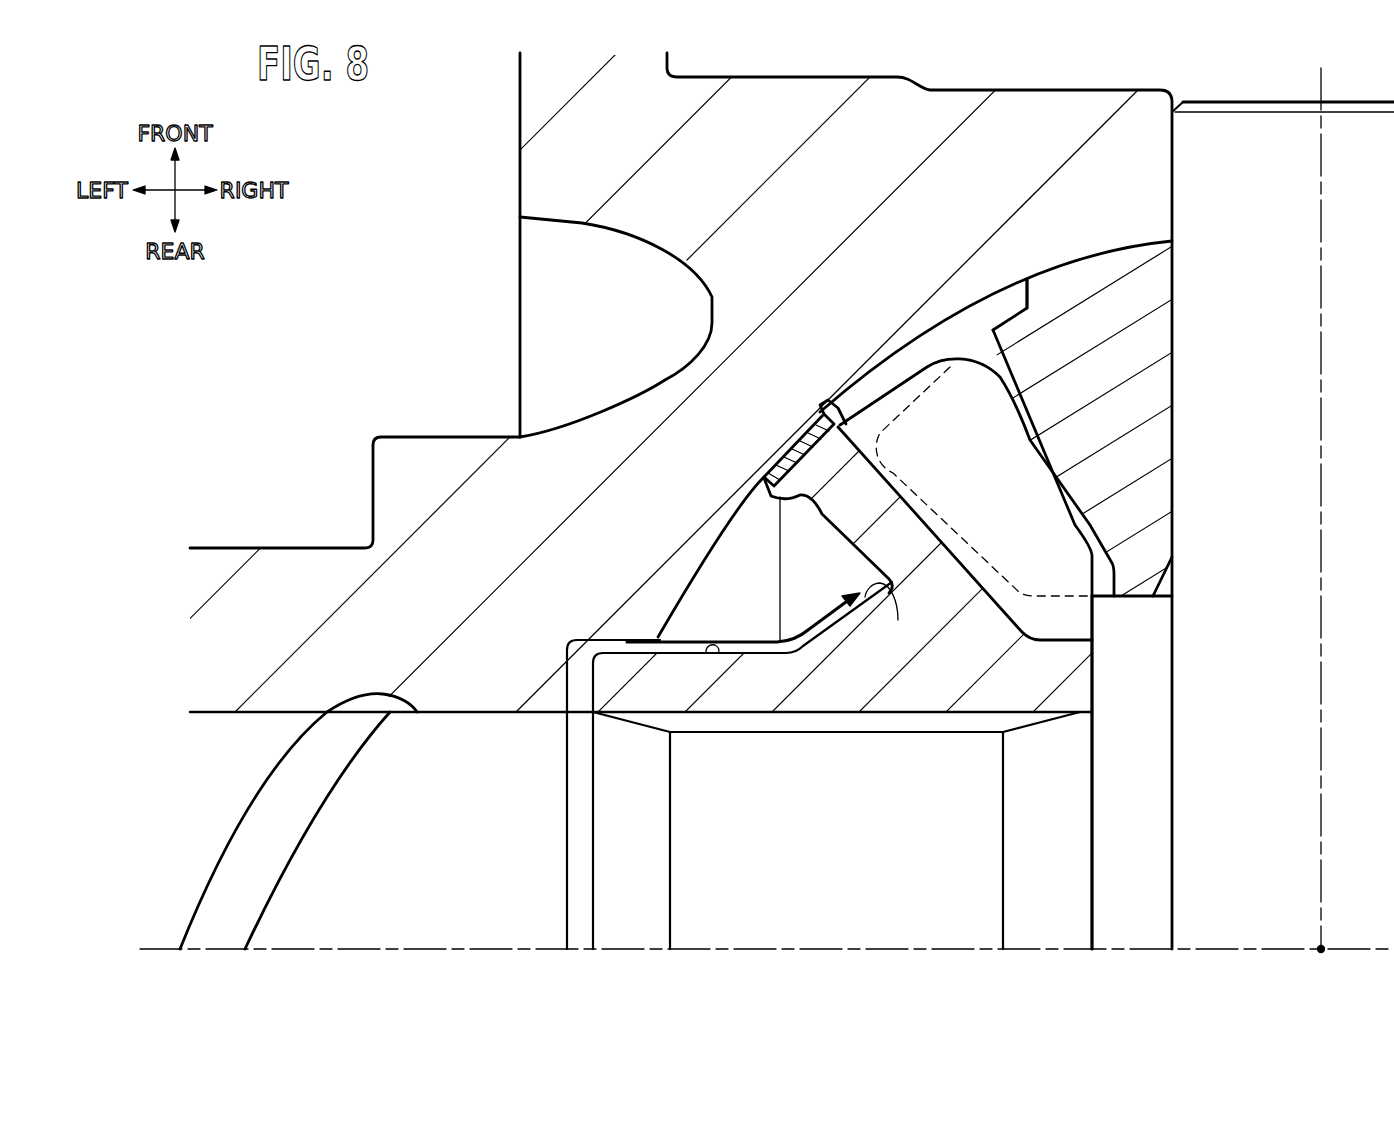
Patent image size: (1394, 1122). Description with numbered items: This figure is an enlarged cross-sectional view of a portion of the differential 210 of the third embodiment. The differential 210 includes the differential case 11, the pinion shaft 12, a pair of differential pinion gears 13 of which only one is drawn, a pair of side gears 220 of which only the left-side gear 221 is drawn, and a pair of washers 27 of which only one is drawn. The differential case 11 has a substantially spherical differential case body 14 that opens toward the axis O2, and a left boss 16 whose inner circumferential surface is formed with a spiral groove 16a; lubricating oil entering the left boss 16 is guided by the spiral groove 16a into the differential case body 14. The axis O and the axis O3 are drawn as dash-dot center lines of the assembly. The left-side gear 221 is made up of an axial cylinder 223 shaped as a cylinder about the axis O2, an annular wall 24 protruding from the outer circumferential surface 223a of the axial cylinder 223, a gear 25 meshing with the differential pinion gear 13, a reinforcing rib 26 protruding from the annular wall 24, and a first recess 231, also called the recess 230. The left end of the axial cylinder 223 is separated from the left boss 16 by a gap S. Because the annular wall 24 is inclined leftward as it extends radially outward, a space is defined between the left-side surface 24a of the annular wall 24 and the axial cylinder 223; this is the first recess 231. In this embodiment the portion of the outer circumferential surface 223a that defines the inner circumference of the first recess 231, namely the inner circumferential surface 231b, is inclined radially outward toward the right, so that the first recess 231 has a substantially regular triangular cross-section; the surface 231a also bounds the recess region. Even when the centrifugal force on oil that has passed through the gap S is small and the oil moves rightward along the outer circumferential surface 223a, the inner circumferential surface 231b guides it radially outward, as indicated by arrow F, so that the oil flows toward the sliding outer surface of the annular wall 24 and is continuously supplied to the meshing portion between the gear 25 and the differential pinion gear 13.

The differential case 11 is at (1157, 178).
The pinion shaft 12 is at (1185, 802).
The differential pinion gear 13 is at (1157, 338).
The differential case body 14 is at (858, 197).
The left boss 16 is at (215, 677).
The spiral groove 16a is at (320, 780).
The annular wall 24 is at (870, 510).
The left-side surface of annular wall 24a is at (743, 521).
The gear 25 is at (973, 372).
The reinforcing rib 26 is at (835, 410).
The washer 27 is at (797, 443).
The differential 210 is at (440, 340).
The side gear 220 is at (1108, 668).
The left-side gear 221 is at (1197, 772).
The axial cylinder 223 is at (788, 684).
The outer circumferential surface of axial cylinder 223a is at (712, 653).
The recess 230 is at (695, 559).
The first recess 231 is at (840, 572).
The seal lip end 231a is at (768, 490).
The inner circumferential surface 231b is at (898, 620).
The arrow F is at (823, 628).
The gap S is at (578, 716).
The axis O is at (1320, 949).
The axis O2 is at (733, 949).
The axis O3 is at (1318, 382).